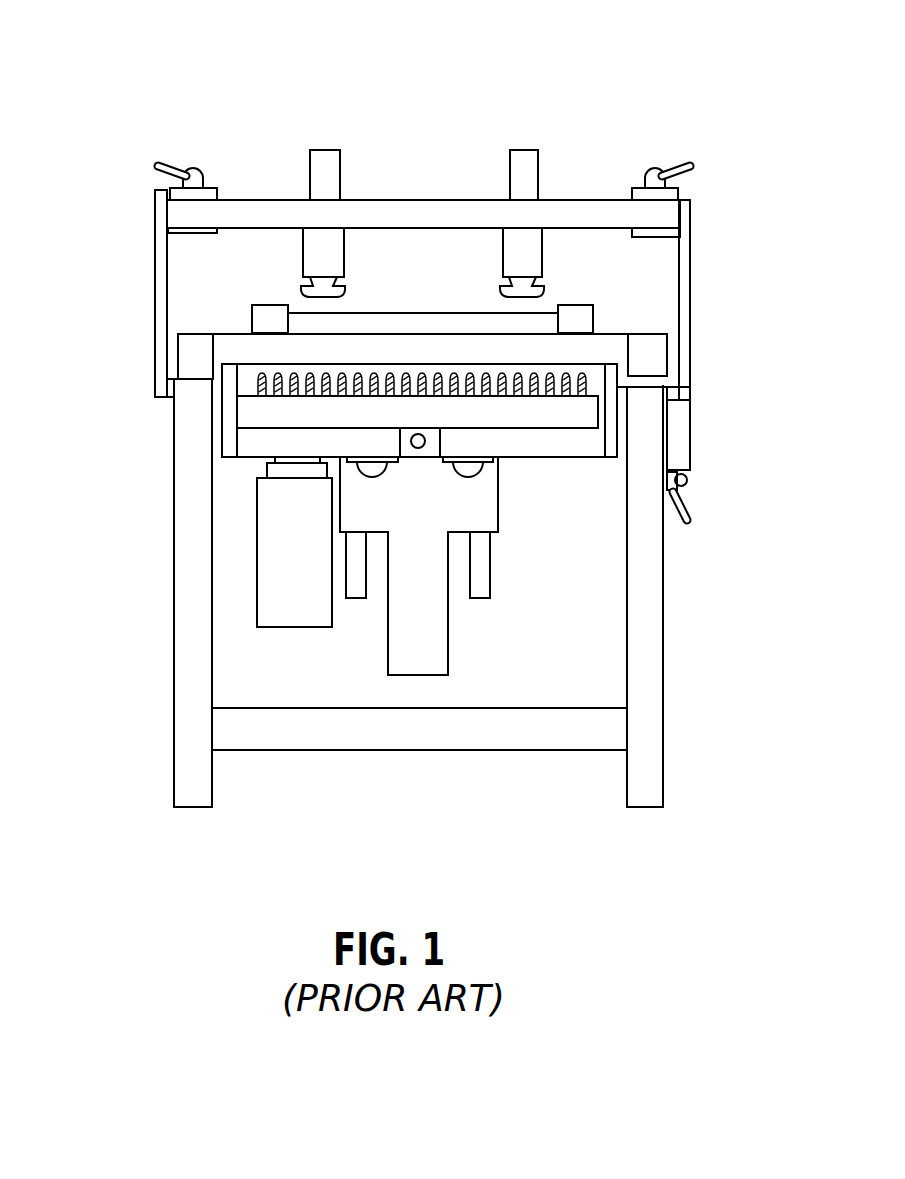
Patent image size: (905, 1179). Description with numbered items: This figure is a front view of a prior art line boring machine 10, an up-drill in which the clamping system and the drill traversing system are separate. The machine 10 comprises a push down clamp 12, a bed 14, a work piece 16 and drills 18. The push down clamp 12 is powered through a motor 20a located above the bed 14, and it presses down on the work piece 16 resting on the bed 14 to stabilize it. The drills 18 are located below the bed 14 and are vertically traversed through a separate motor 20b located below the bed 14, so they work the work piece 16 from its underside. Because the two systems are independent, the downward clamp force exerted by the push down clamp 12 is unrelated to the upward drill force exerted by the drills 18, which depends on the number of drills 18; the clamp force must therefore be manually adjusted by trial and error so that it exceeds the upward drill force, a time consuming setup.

The prior art line boring machine 10 is at (124, 76).
The motor 20a is at (542, 160).
The push down clamp 12 is at (528, 257).
The work piece 16 is at (537, 325).
The bed 14 is at (658, 353).
The drill 18 is at (575, 415).
The motor 20b is at (427, 665).